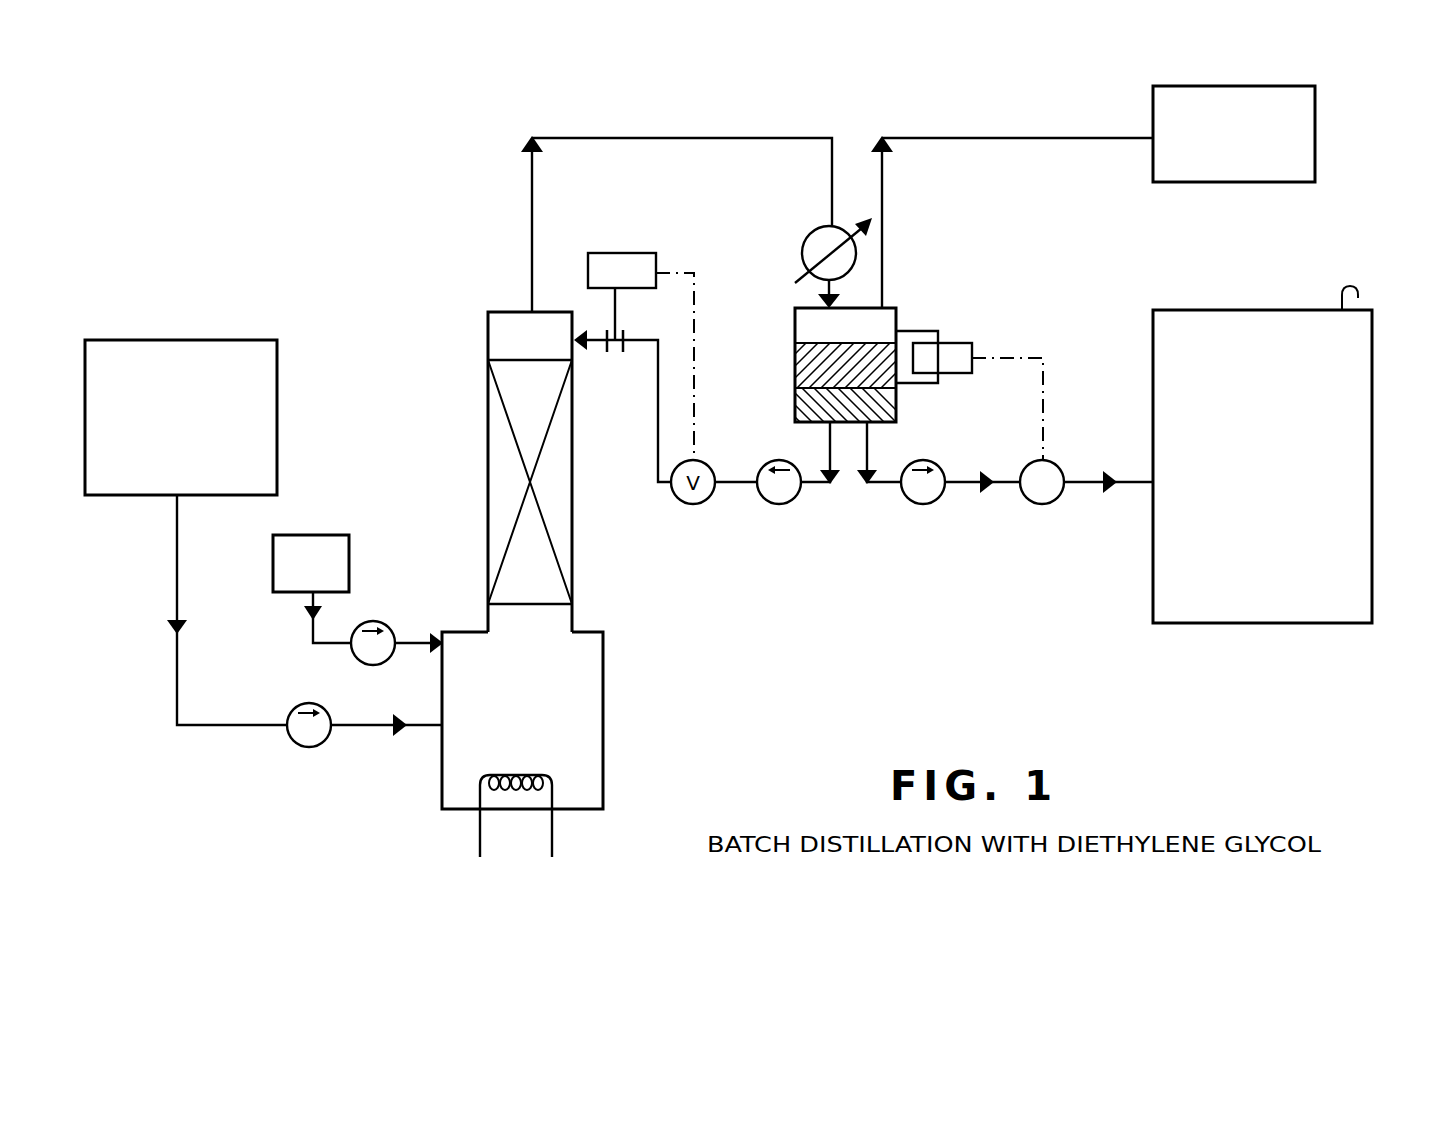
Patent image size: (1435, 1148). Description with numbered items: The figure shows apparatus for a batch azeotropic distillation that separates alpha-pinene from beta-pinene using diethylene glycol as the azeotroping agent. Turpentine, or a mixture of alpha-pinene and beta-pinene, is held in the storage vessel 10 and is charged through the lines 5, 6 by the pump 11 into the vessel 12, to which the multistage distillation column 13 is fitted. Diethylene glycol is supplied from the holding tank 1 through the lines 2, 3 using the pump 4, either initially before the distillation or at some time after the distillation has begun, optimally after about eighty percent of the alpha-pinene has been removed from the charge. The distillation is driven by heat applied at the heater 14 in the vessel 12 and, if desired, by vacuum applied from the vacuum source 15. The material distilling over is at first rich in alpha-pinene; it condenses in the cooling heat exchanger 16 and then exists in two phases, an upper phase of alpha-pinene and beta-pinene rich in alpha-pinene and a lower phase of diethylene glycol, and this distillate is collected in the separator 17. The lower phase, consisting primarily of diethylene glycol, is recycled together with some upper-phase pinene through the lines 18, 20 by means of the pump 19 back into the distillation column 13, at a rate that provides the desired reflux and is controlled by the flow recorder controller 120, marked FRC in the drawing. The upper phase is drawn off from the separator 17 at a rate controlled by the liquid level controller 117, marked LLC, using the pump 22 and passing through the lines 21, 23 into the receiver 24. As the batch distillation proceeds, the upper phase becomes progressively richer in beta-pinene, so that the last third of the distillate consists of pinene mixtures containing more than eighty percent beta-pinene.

The holding tank 1 is at (279, 577).
The line 2 is at (308, 631).
The line 3 is at (410, 641).
The pump 4 is at (358, 657).
The line 5 is at (209, 724).
The line 6 is at (373, 731).
The storage vessel 10 is at (101, 491).
The pump 11 is at (291, 741).
The vessel 12 is at (590, 768).
The multistage distillation column 13 is at (513, 398).
The heat 14 is at (477, 787).
The vacuum 15 is at (1290, 148).
The cooling heat exchanger 16 is at (815, 235).
The separator 17 is at (796, 320).
The line 18 is at (815, 489).
The pump 19 is at (778, 503).
The line 20 is at (658, 393).
The line 21 is at (880, 489).
The pump 22 is at (923, 503).
The line 23 is at (1122, 489).
The receiver 24 is at (1372, 467).
The liquid level controller 117 is at (943, 343).
The flow recorder controller 120 is at (605, 252).